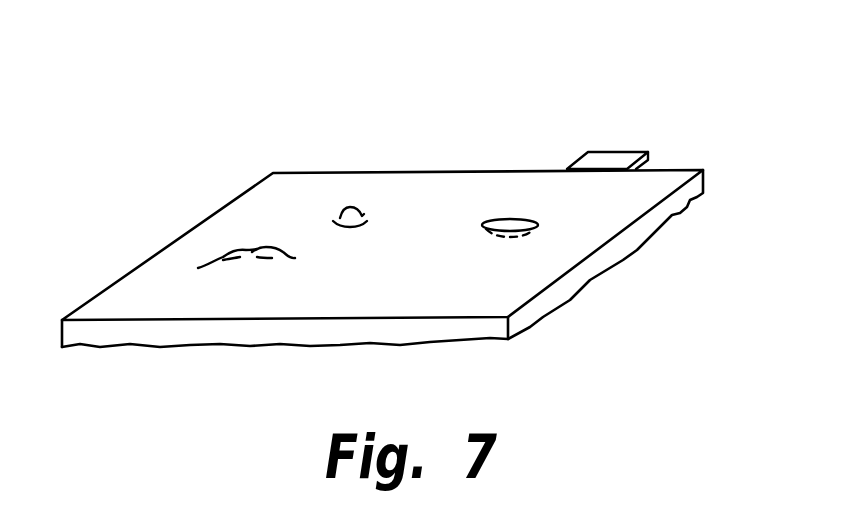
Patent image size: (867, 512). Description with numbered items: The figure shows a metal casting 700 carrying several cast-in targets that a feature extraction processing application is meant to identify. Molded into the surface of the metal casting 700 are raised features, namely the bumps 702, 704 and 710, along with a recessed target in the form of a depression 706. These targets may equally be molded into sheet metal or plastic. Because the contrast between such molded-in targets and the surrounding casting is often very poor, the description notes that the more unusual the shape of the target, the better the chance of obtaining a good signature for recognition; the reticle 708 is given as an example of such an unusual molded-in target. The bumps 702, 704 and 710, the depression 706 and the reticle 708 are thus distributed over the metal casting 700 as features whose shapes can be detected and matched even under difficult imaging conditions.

The metal casting 700 is at (550, 298).
The bump 702 is at (222, 267).
The bump 704 is at (352, 209).
The depression 706 is at (533, 222).
The reticle 708 is at (253, 250).
The bump 710 is at (622, 150).